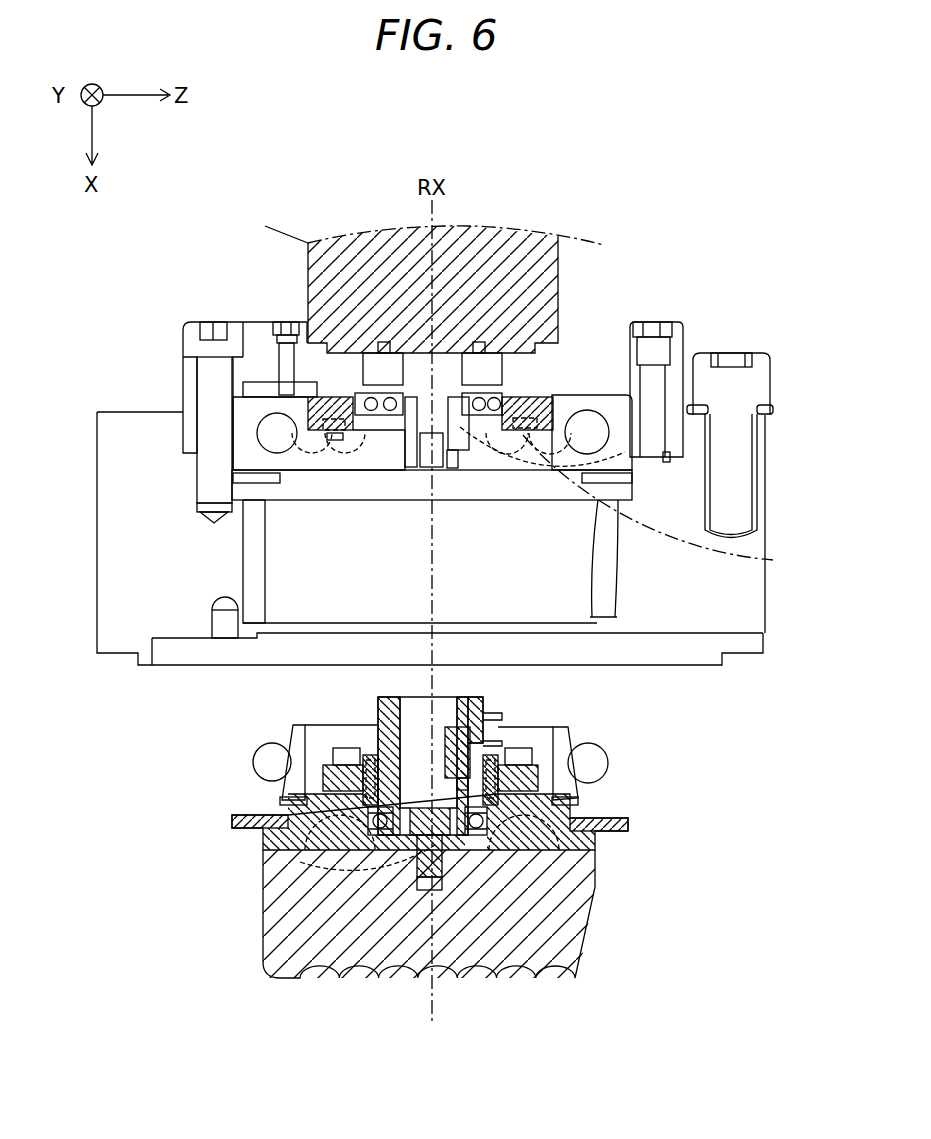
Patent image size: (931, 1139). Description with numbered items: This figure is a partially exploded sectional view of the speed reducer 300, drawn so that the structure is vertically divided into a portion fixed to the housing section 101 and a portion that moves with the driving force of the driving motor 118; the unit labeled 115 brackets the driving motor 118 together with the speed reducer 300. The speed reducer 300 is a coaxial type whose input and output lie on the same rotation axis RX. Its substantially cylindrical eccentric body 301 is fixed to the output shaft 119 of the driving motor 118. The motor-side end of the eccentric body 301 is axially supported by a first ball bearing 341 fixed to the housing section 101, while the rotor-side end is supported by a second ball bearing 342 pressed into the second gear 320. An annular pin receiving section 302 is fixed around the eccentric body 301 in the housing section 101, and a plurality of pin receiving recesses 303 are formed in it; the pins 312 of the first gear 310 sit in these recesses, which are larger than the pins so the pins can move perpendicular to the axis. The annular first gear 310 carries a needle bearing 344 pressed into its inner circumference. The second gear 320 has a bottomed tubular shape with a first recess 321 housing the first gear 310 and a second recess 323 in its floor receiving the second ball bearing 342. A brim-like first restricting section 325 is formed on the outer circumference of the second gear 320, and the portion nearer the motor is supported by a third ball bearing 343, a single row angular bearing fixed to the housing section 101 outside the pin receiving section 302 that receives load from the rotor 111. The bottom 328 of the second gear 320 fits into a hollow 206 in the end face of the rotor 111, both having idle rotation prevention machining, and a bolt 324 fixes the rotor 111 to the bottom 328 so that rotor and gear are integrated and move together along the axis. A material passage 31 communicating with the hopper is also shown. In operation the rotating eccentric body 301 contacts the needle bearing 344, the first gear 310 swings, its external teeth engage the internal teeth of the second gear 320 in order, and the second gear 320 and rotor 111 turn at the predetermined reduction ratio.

The rotary unit 115 is at (160, 207).
The driving motor 118 is at (300, 262).
The speed reducer 300 is at (226, 287).
The pin receiving section 302 is at (318, 398).
The first ball bearing 341 is at (502, 396).
The third ball bearing 343 is at (617, 415).
The output shaft 119 is at (410, 427).
The housing section 101 is at (132, 548).
The pin receiving recesses 303 is at (526, 486).
The material passage 31 is at (740, 630).
The eccentric body 301 is at (377, 750).
The needle bearing 344 is at (283, 790).
The second ball bearing 342 is at (250, 823).
The hollow 206 is at (280, 862).
The bottom 328 is at (355, 898).
The pins 312 is at (517, 748).
The first gear 310 is at (537, 778).
The first recess 321 is at (552, 781).
The second gear 320 is at (577, 800).
The first restricting section 325 is at (628, 827).
The second recess 323 is at (545, 878).
The bolt 324 is at (560, 898).
The rotor 111 is at (580, 957).